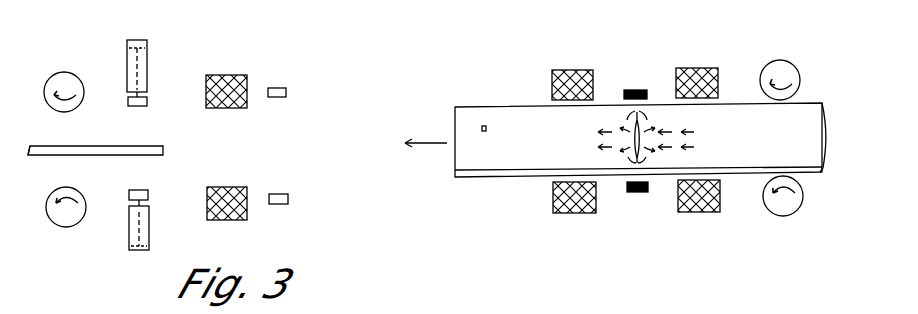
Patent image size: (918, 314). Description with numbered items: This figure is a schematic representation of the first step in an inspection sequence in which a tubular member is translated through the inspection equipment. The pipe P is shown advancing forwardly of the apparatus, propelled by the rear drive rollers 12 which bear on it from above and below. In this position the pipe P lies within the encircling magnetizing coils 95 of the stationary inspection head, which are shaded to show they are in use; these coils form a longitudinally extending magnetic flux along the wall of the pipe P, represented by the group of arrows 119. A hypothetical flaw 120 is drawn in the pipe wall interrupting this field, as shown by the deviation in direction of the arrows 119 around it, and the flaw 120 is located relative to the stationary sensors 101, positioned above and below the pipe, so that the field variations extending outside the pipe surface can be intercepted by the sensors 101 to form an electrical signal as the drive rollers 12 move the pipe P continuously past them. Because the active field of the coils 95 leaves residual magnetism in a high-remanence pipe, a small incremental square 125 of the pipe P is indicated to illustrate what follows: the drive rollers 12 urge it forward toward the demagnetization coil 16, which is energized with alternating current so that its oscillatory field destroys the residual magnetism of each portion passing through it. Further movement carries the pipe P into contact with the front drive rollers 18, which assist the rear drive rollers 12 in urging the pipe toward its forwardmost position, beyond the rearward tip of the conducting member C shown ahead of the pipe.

The front drive rollers 18 is at (80, 72).
The demagnetization coil 16 is at (234, 74).
The conducting member C is at (165, 150).
The pipe P is at (512, 180).
The incremental square 125 is at (484, 125).
The magnetizing coils 95 is at (572, 69).
The sensors 101 is at (637, 89).
The drive rollers 12 is at (766, 63).
The flaw 120 is at (600, 138).
The arrows 119 is at (716, 147).